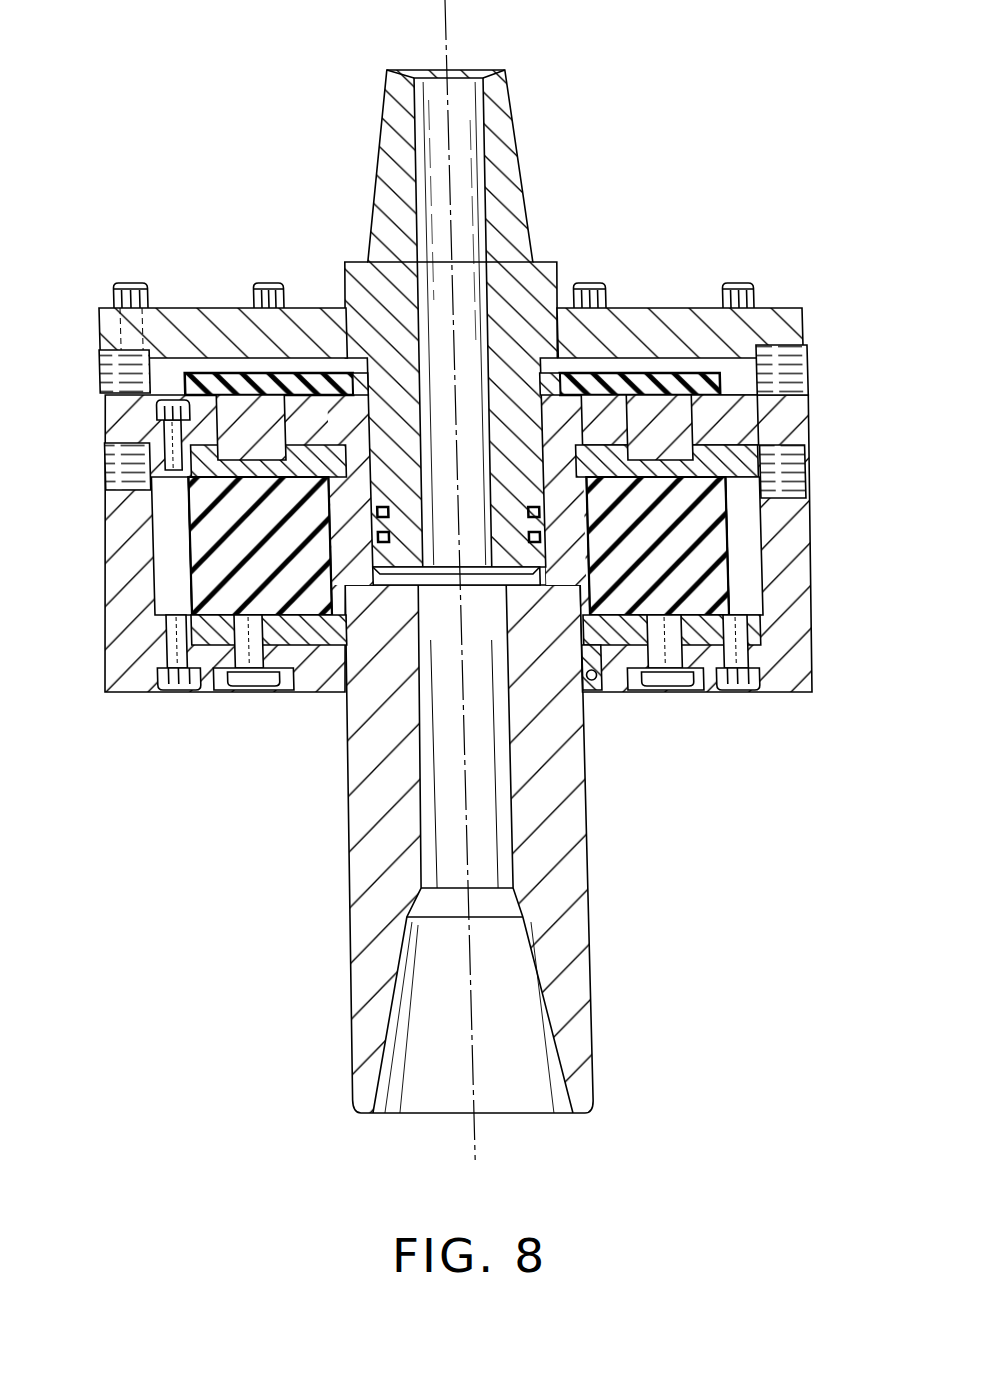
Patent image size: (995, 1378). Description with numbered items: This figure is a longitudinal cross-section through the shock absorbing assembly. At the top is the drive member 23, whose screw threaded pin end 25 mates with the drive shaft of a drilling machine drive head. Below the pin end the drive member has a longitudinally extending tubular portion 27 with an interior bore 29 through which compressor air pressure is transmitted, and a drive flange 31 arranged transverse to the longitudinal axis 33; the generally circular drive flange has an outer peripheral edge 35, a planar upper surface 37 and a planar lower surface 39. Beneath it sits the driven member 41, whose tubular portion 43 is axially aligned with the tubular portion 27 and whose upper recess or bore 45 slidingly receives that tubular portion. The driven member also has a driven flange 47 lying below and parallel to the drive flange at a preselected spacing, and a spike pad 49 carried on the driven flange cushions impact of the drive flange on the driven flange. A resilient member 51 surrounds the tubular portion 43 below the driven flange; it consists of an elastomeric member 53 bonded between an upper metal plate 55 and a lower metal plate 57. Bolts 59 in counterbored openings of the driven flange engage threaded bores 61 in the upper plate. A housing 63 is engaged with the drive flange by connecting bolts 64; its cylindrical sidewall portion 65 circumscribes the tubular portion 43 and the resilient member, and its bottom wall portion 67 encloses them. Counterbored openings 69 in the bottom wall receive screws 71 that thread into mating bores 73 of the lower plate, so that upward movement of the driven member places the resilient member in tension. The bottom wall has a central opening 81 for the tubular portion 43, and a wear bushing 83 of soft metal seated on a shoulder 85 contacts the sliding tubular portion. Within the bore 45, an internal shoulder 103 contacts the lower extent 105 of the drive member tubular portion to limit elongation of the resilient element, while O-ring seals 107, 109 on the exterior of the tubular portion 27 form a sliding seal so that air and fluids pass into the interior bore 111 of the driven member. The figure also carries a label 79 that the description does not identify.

The drive member 23 is at (812, 318).
The pin end 25 is at (529, 135).
The longitudinally extending tubular portion 27 is at (526, 262).
The interior bore 29 is at (484, 242).
The drive flange 31 is at (680, 413).
The longitudinal axis 33 is at (458, 24).
The outer peripheral edge 35 is at (104, 338).
The planar upper surface 37 is at (187, 330).
The planar lower surface 39 is at (235, 362).
The driven member 41 is at (795, 565).
The tubular portion 43 is at (580, 808).
The upper recess or bore 45 is at (586, 400).
The driven flange 47 is at (635, 372).
The spike pad 49 is at (308, 378).
The resilient member 51 is at (680, 590).
The elastomeric member 53 is at (697, 567).
The upper metal plate 55 is at (762, 473).
The lower metal plate 57 is at (740, 645).
The bolts 59 is at (746, 440).
The threaded bores 61 is at (155, 458).
The housing 63 is at (810, 503).
The connecting bolts 64 is at (134, 283).
The cylindrical sidewall portion 65 is at (105, 525).
The bottom wall portion 67 is at (785, 695).
The counterbored openings 69 is at (745, 662).
The screws 71 is at (727, 690).
The mating bores 73 is at (165, 650).
The magnet core 79 is at (703, 400).
The central opening 81 is at (359, 690).
The wear bushing 83 is at (645, 690).
The shoulder 85 is at (600, 683).
The internal shoulder 103 is at (392, 578).
The lower extent 105 is at (508, 580).
The O-ring seal 107 is at (380, 548).
The O-ring seal 109 is at (300, 585).
The interior bore 111 is at (500, 812).